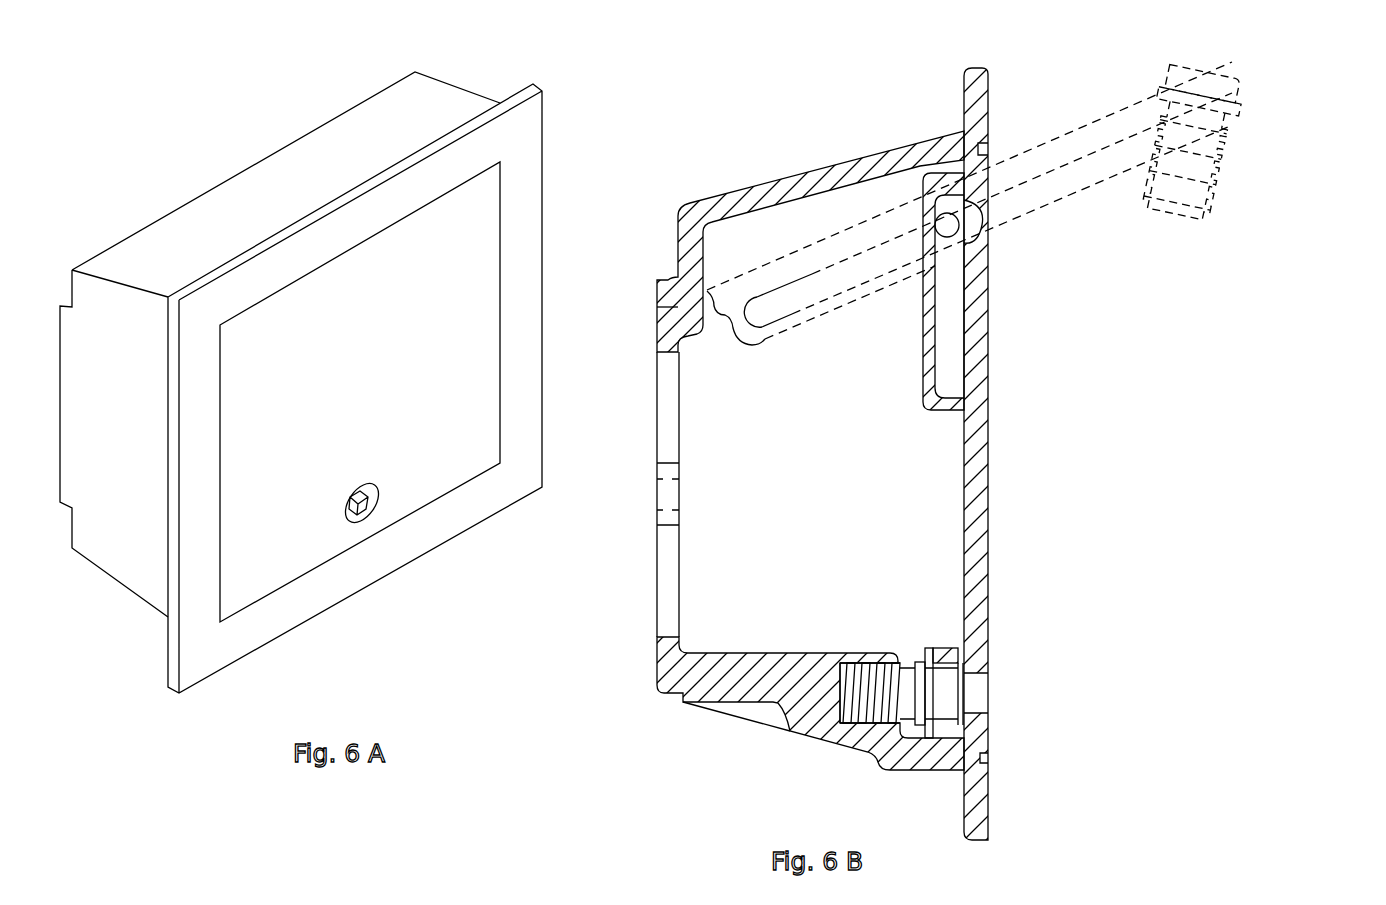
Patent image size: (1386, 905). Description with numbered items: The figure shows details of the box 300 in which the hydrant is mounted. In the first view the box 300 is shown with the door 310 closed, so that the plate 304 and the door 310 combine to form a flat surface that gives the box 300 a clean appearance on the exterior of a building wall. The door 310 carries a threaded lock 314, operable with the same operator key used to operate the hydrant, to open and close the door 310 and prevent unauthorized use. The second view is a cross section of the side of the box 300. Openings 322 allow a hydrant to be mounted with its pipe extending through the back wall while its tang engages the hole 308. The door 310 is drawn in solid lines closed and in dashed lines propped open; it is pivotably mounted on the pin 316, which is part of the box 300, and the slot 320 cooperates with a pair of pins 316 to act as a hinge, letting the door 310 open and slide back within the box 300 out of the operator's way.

In FIG. 6B, the box 300 is at (612, 102).
In FIG. 6A, the plate 304 is at (522, 232).
In FIG. 6B, the plate 304 is at (976, 454).
In FIG. 6A, the hole 308 is at (280, 344).
In FIG. 6B, the hole 308 is at (657, 503).
In FIG. 6A, the door 310 is at (462, 308).
In FIG. 6B, the door 310 is at (1085, 140).
In FIG. 6A, the threaded lock 314 is at (370, 507).
In FIG. 6B, the threaded lock 314 is at (982, 690).
In FIG. 6B, the pin 316 is at (933, 208).
In FIG. 6B, the slot 320 is at (950, 338).
In FIG. 6B, the openings 322 is at (668, 423).